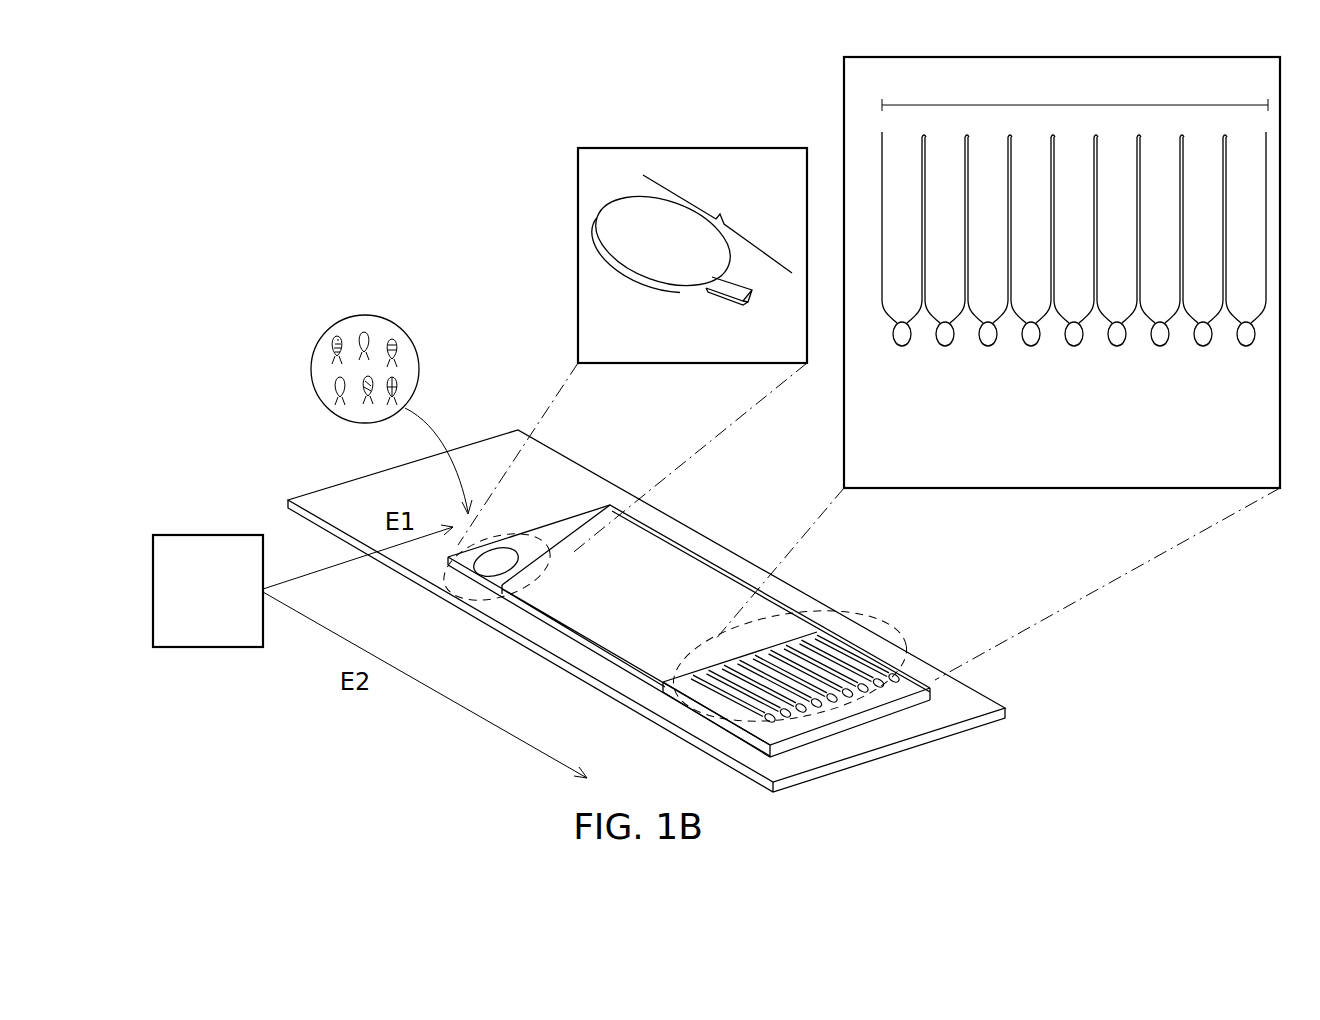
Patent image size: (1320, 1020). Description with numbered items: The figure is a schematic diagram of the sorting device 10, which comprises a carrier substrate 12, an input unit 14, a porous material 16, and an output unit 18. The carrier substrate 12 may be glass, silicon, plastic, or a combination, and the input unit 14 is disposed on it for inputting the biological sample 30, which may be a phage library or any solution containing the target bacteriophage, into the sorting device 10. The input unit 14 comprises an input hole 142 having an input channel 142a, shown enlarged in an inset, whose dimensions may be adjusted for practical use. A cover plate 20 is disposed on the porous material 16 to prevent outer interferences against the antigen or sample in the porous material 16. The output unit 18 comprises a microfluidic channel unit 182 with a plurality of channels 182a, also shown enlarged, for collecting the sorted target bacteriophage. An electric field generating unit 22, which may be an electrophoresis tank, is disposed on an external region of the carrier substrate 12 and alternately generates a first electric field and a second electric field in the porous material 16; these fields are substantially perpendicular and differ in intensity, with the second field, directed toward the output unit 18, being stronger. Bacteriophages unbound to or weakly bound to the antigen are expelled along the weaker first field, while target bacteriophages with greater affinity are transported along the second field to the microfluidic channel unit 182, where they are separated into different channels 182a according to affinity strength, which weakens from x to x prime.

The sorting device 10 is at (186, 80).
The carrier substrate 12 is at (333, 500).
The input unit 14 is at (585, 528).
The input hole 142 is at (497, 557).
The input channel 142a is at (725, 293).
The porous material 16 is at (553, 625).
The output unit 18 is at (845, 707).
The microfluidic channel unit 182 is at (1257, 420).
The channel 182a is at (1241, 392).
The cover plate 20 is at (682, 570).
The electric field generating unit 22 is at (192, 603).
The biological sample 30 is at (365, 314).